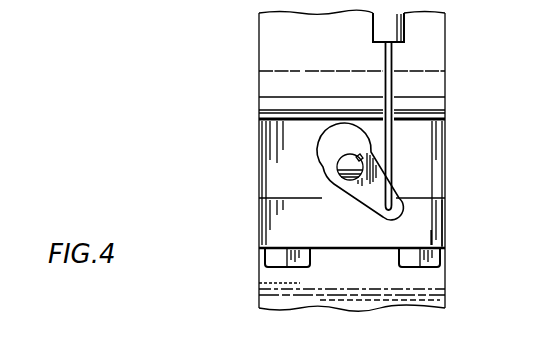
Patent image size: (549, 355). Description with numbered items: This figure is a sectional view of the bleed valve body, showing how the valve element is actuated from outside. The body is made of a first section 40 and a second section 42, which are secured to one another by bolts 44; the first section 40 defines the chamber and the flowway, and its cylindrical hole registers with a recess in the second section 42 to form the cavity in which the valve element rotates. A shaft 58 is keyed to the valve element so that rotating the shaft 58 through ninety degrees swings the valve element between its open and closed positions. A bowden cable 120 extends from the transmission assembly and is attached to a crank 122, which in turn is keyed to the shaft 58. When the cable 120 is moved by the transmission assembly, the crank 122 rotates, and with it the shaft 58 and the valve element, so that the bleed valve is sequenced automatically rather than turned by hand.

The first section 40 is at (435, 140).
The second section 42 is at (438, 217).
The bolts 44 is at (435, 258).
The shaft 58 is at (338, 158).
The bowden cable 120 is at (392, 83).
The crank 122 is at (337, 184).